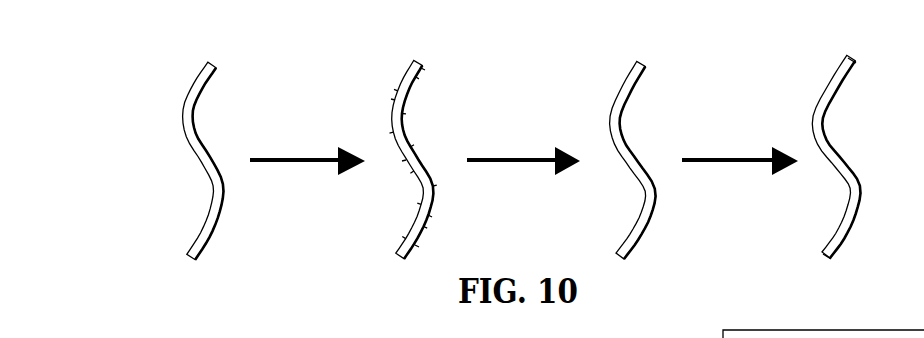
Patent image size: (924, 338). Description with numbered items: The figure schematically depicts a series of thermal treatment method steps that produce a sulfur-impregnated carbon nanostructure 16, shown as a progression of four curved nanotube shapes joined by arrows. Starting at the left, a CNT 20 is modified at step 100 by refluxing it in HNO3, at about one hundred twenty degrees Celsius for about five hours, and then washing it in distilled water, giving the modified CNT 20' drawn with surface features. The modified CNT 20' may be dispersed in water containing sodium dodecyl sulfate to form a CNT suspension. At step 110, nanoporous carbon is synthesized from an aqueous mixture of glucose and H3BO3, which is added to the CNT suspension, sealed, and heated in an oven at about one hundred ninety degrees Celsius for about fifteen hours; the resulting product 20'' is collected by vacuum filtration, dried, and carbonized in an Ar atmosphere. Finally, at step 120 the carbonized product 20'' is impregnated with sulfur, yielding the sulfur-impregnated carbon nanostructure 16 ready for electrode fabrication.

The carbon nanotube 20 is at (185, 161).
The modified carbon nanotube 20' is at (395, 160).
The product 20'' is at (615, 161).
The sulfur-impregnated carbon nanostructure 16 is at (812, 110).
The CNT modification step 100 is at (314, 158).
The nanoporous carbon synthesis step 110 is at (534, 158).
The sulfur impregnation step 120 is at (751, 158).